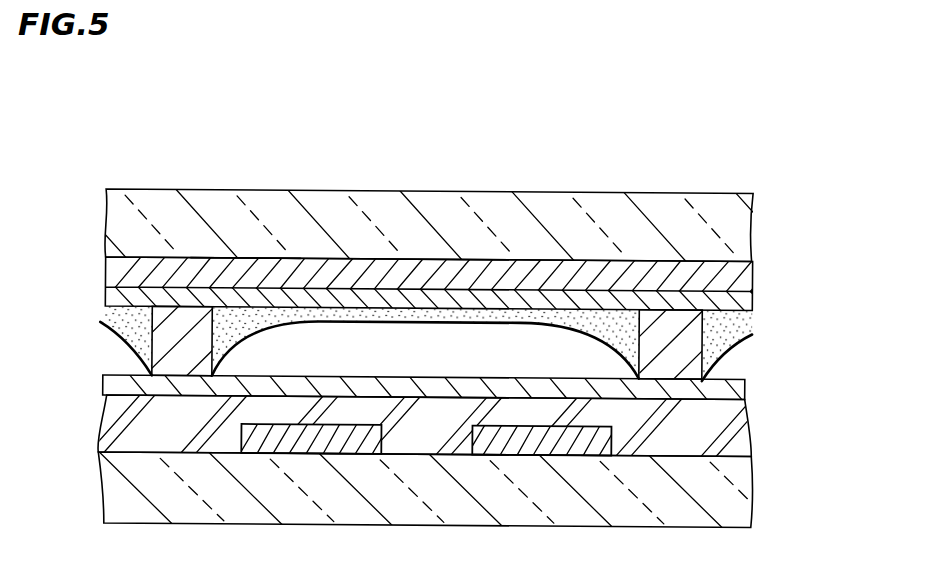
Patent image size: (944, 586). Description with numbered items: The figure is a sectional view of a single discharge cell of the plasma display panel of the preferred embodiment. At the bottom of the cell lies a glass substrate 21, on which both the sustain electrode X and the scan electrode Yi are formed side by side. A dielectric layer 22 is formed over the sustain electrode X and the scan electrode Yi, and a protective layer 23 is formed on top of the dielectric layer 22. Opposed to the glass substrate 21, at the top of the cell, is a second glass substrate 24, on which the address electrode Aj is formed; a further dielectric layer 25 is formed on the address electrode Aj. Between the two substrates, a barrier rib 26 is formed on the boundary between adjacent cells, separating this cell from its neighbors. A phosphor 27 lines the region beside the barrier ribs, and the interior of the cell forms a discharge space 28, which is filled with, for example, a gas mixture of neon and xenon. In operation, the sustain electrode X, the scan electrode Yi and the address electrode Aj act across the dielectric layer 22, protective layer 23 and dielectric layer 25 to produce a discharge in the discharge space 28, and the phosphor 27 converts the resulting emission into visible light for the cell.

The glass substrate 21 is at (730, 493).
The dielectric layer 22 is at (722, 428).
The protective layer 23 is at (730, 393).
The glass substrate 24 is at (728, 238).
The dielectric layer 25 is at (728, 303).
The barrier rib 26 is at (677, 352).
The phosphor 27 is at (590, 322).
The discharge space 28 is at (370, 340).
The address electrode Aj is at (247, 258).
The sustain electrode X is at (297, 445).
The scan electrode Yi is at (527, 445).